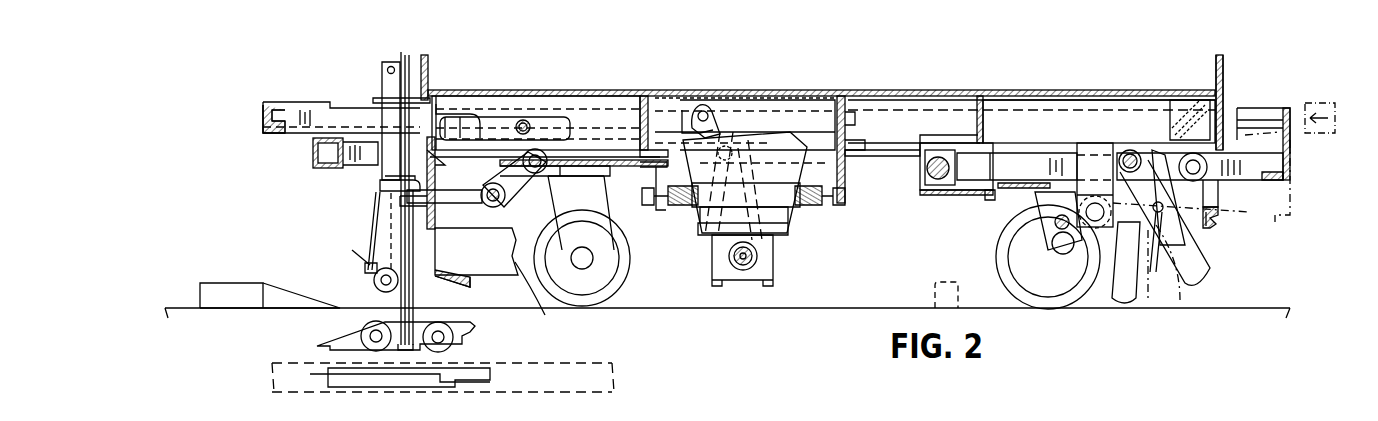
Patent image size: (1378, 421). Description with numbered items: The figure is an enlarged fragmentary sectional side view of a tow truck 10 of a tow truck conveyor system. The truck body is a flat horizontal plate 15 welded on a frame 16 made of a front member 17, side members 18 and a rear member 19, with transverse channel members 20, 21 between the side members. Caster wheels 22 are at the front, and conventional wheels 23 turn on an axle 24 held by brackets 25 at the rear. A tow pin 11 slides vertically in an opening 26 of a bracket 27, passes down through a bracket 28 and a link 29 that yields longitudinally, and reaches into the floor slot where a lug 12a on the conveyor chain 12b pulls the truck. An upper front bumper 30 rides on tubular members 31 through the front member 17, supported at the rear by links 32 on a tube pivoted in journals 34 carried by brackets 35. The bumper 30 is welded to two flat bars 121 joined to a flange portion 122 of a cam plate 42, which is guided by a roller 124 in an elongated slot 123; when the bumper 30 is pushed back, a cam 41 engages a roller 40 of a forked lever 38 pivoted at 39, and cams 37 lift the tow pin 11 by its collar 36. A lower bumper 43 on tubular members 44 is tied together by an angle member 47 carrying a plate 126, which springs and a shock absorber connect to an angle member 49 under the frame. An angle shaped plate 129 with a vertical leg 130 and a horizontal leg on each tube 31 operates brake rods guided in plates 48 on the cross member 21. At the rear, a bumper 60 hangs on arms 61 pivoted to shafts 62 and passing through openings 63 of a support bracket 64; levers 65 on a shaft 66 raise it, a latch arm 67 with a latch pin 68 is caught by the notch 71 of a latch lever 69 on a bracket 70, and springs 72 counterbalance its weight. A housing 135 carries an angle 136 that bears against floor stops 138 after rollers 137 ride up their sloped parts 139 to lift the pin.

The tow truck 10 is at (707, 80).
The tow pin 11 is at (383, 78).
The lug 12a is at (440, 318).
The conveyor chain 12b is at (490, 380).
The flat horizontal plate 15 is at (960, 98).
The frame 16 is at (1208, 78).
The front member 17 is at (437, 92).
The side members 18 is at (1088, 98).
The rear member 19 is at (1226, 95).
The transverse channel member 20 is at (644, 90).
The transverse channel member 21 is at (984, 112).
The caster wheels 22 is at (580, 200).
The wheels 23 is at (1000, 260).
The axle 24 is at (1060, 254).
The brackets 25 is at (1006, 184).
The opening 26 is at (406, 60).
The bracket 27 is at (373, 98).
The bracket 28 is at (375, 263).
The link 29 is at (440, 268).
The upper front bumper 30 is at (262, 114).
The tubular members 31 is at (806, 95).
The links 32 is at (716, 105).
The journals 34 is at (776, 250).
The brackets 35 is at (790, 224).
The collar 36 is at (380, 186).
The cams 37 is at (364, 210).
The forked lever 38 is at (448, 205).
The pivot 39 is at (494, 206).
The roller 40 is at (560, 164).
The cam 41 is at (520, 158).
The cam plate 42 is at (547, 108).
The lower bumper 43 is at (313, 166).
The tubular members 44 is at (680, 212).
The connecting angle member 47 is at (885, 138).
The plates 48 is at (965, 203).
The angle member 49 is at (650, 215).
The rear bumper 60 is at (1286, 108).
The arms 61 is at (1250, 182).
The shafts 62 is at (940, 160).
The openings 63 is at (1225, 190).
The support bracket 64 is at (1210, 228).
The levers 65 is at (1158, 160).
The shaft 66 is at (1128, 150).
The latch arm 67 is at (1206, 270).
The latch pin 68 is at (1160, 212).
The latch lever 69 is at (1118, 306).
The bracket 70 is at (1090, 145).
The notch 71 is at (1160, 272).
The springs 72 is at (1175, 100).
The flat bars 121 is at (315, 100).
The flange portion 122 is at (478, 100).
The elongated slot 123 is at (521, 122).
The roller 124 is at (540, 116).
The plate 126 is at (770, 100).
The angle shaped plate 129 is at (848, 90).
The vertical leg 130 is at (848, 112).
The housing 135 is at (547, 296).
The angle 136 is at (472, 282).
The rollers 137 is at (360, 258).
The stops 138 is at (215, 283).
The sloped parts 139 is at (305, 290).